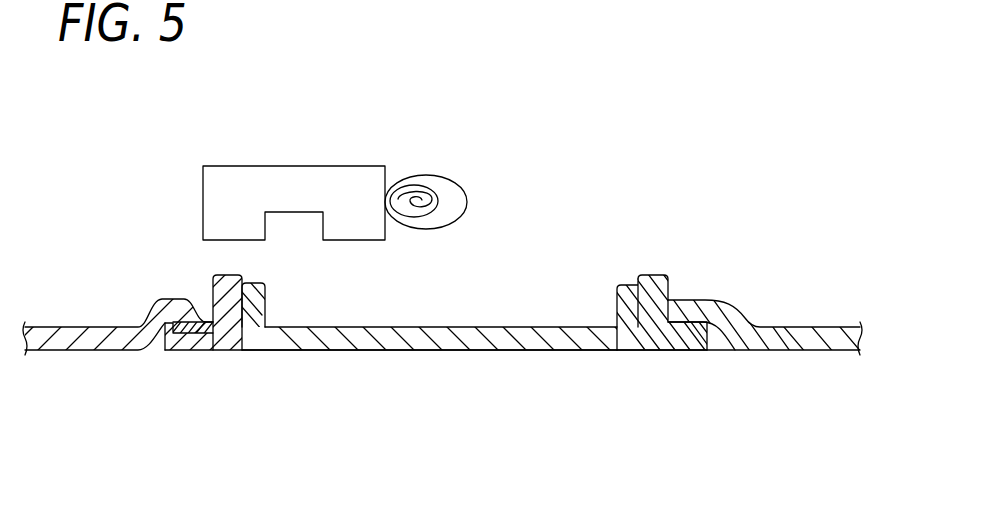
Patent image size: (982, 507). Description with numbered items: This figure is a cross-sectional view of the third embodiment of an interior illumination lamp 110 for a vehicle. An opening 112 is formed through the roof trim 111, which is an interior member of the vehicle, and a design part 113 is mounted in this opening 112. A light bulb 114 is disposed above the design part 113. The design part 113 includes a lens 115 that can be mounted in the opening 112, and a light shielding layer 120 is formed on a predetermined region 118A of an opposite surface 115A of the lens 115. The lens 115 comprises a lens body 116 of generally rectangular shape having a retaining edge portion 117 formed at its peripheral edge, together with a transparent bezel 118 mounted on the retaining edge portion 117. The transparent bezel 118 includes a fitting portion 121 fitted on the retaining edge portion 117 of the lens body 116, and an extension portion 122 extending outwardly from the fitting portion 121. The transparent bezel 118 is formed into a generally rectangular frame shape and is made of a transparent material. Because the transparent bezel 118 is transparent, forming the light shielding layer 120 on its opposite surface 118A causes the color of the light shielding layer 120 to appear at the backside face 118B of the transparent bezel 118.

The interior illumination lamp 110 is at (553, 168).
The roof trim 111 is at (820, 352).
The opening 112 is at (643, 352).
The design part 113 is at (585, 275).
The light bulb 114 is at (419, 173).
The lens 115 is at (480, 354).
The opposite surface 115A is at (472, 327).
The lens body 116 is at (370, 352).
The retaining edge portion 117 is at (265, 301).
The transparent bezel 118 is at (219, 354).
The opposite surface of the transparent bezel 118A is at (199, 319).
The backside face 118B is at (686, 352).
The light shielding layer 120 is at (670, 294).
The fitting portion 121 is at (222, 277).
The extension portion 122 is at (150, 318).